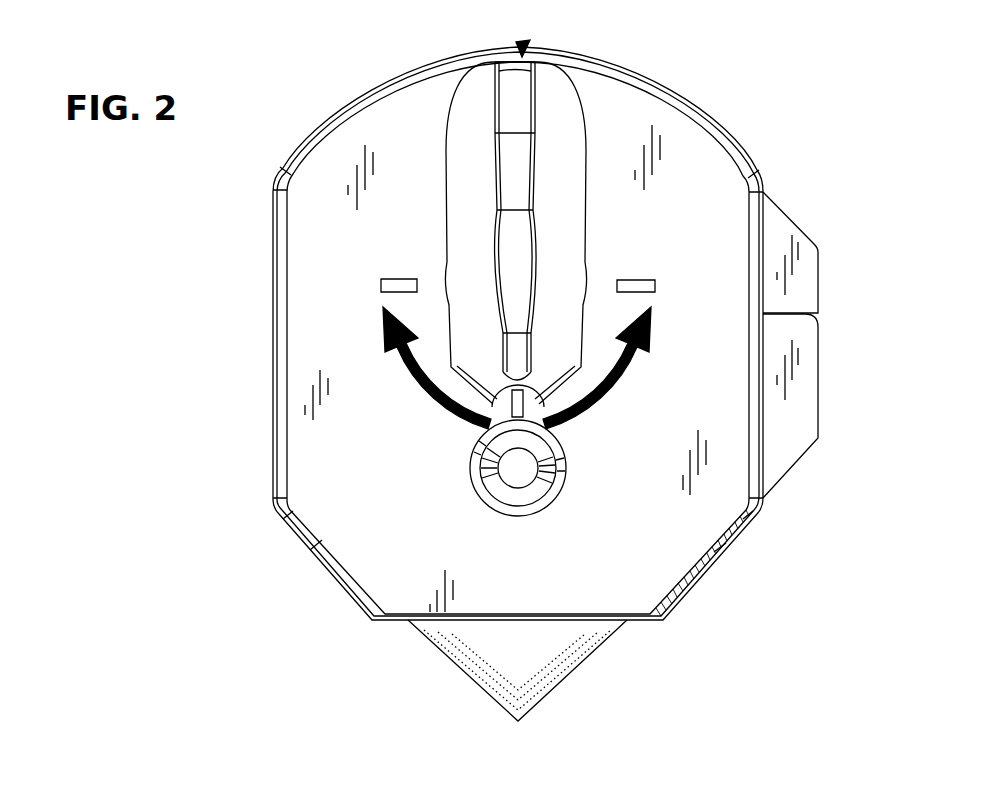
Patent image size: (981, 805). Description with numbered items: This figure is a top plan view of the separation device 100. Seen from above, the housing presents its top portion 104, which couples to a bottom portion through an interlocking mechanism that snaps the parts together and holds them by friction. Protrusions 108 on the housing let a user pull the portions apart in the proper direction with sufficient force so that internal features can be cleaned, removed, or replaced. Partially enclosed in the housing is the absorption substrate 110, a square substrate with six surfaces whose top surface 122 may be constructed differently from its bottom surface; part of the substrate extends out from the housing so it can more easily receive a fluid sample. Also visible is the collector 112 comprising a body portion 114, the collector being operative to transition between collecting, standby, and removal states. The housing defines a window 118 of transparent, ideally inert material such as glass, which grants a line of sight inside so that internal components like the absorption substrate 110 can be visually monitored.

The separation device 100 is at (135, 330).
The top portion 104 is at (320, 208).
The protrusions 108 is at (807, 284).
The absorption substrate 110 is at (450, 660).
The collector 112 is at (528, 38).
The body portion 114 is at (560, 115).
The window 118 is at (515, 462).
The top surface 122 is at (540, 650).